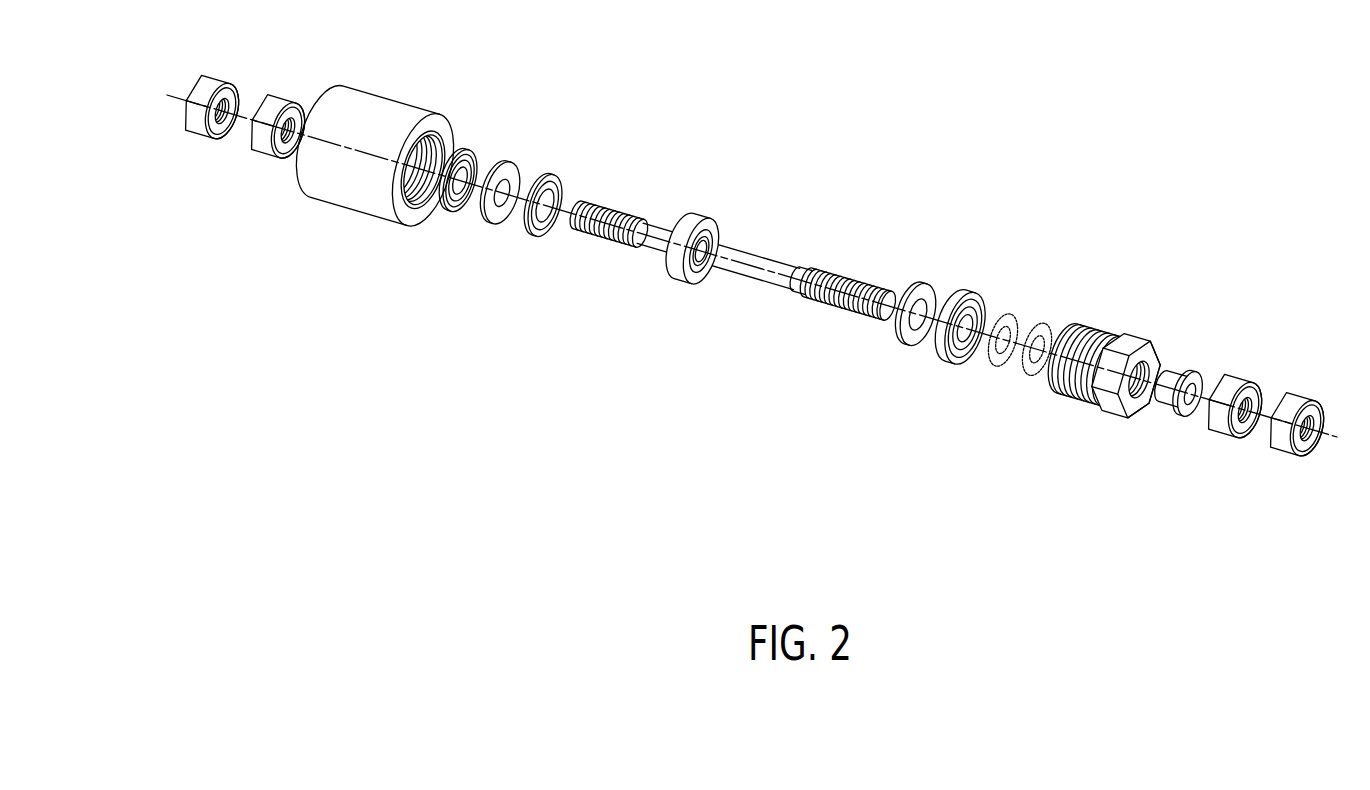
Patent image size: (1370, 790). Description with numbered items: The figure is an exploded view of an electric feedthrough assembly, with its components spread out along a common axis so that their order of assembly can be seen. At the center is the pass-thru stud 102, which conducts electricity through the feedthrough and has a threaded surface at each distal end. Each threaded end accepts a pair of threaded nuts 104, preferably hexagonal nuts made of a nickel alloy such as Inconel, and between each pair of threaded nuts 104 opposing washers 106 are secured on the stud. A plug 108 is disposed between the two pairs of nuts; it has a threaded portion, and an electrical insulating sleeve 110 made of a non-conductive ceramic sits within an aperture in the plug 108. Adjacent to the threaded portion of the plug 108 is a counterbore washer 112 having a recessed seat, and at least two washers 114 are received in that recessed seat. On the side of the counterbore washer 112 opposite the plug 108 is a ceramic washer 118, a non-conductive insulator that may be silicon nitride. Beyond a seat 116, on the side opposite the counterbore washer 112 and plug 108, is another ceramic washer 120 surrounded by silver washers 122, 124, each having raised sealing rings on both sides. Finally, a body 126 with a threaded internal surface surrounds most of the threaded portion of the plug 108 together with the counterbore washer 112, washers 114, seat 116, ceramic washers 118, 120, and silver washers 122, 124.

The pass-thru stud 102 is at (731, 255).
The threaded nuts 104 is at (757, 263).
The washers 106 is at (213, 138).
The plug 108 is at (1131, 338).
The electrical insulating sleeve 110 is at (1175, 418).
The counterbore washer 112 is at (975, 295).
The washers 114 is at (995, 370).
The seat 116 is at (677, 277).
The ceramic washer 118 is at (922, 280).
The ceramic washer 120 is at (508, 158).
The silver washer 122 is at (553, 173).
The silver washer 124 is at (467, 148).
The body 126 is at (375, 150).